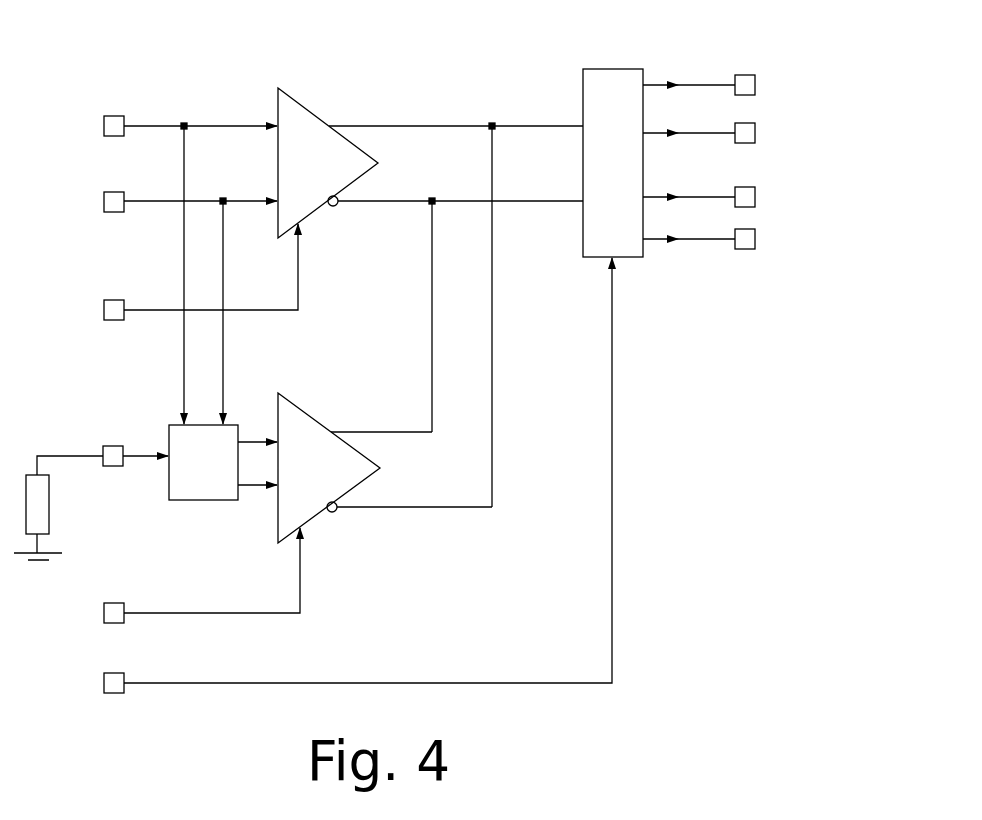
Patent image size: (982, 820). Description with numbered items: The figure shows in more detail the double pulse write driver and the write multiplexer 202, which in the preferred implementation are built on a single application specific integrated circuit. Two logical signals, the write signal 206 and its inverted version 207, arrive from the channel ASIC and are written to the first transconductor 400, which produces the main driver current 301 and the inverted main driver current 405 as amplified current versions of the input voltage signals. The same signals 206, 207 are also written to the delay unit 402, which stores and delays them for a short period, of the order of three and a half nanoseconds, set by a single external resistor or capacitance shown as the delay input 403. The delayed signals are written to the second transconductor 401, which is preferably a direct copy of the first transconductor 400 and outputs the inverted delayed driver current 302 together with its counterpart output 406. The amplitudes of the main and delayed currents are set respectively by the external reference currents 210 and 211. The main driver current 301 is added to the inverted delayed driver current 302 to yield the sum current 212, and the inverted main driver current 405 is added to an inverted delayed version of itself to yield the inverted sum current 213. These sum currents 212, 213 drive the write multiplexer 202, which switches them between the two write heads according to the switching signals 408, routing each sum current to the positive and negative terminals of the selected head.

The write multiplexer 202 is at (622, 82).
The WriteP write signal 206 is at (165, 250).
The WriteN write signal 207 is at (165, 295).
The reference current IW 210 is at (175, 273).
The reference current IW Pulse 211 is at (186, 575).
The sum write current 212 is at (537, 112).
The inverted sum write current 213 is at (507, 190).
The main driver current 301 is at (412, 300).
The inverted delayed driver current 302 is at (409, 496).
The first transconductor 400 is at (328, 163).
The second transconductor 401 is at (329, 468).
The delay unit 402 is at (223, 462).
The IW Delay input with resistor 403 is at (91, 477).
The inverted main driver current 405 is at (381, 314).
The second amplifier output 406 is at (381, 420).
The switching signals 408 is at (342, 475).